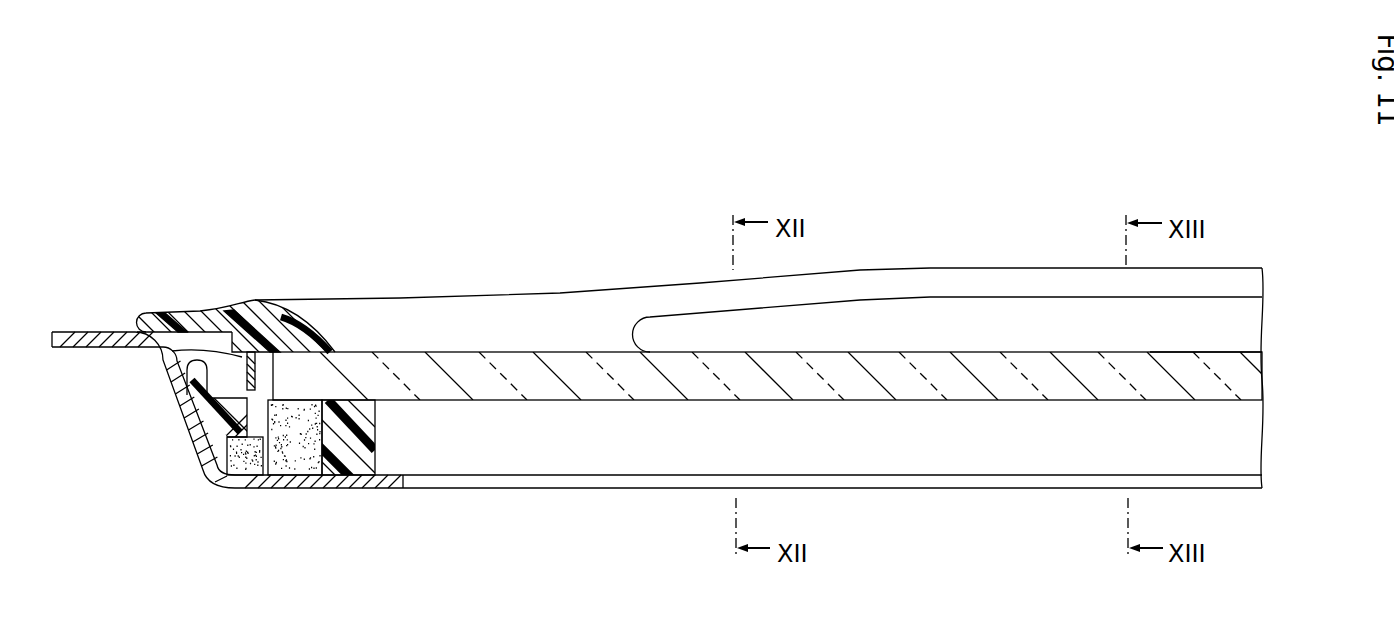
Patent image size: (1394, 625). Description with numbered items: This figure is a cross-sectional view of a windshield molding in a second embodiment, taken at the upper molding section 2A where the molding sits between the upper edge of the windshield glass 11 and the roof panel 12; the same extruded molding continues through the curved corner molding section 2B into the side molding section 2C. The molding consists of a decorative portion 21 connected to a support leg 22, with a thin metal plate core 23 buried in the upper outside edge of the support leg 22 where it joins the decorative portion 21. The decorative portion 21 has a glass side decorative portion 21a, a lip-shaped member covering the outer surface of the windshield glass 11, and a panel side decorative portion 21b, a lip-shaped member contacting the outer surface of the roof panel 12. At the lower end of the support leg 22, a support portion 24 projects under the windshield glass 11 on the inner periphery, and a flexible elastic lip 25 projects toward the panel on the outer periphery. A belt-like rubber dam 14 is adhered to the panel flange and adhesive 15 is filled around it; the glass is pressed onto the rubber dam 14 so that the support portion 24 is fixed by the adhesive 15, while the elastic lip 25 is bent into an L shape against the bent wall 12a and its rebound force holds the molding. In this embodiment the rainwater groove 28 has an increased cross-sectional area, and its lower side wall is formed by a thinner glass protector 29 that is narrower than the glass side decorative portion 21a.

The upper molding section 2A is at (138, 299).
The corner molding section 2B is at (580, 291).
The side molding section 2C is at (1081, 254).
The windshield glass 11 is at (537, 380).
The roof panel 12 is at (80, 331).
The bent wall 12a is at (187, 433).
The rubber dam 14 is at (370, 445).
The adhesive 15 is at (302, 455).
The decorative portion 21 is at (354, 215).
The glass side decorative portion 21a is at (293, 333).
The panel side decorative portion 21b is at (157, 313).
The support leg 22 is at (217, 480).
The metal plate core 23 is at (165, 356).
The support portion 24 is at (272, 443).
The elastic lip 25 is at (178, 400).
The rainwater groove 28 is at (921, 318).
The glass protector 29 is at (1232, 342).